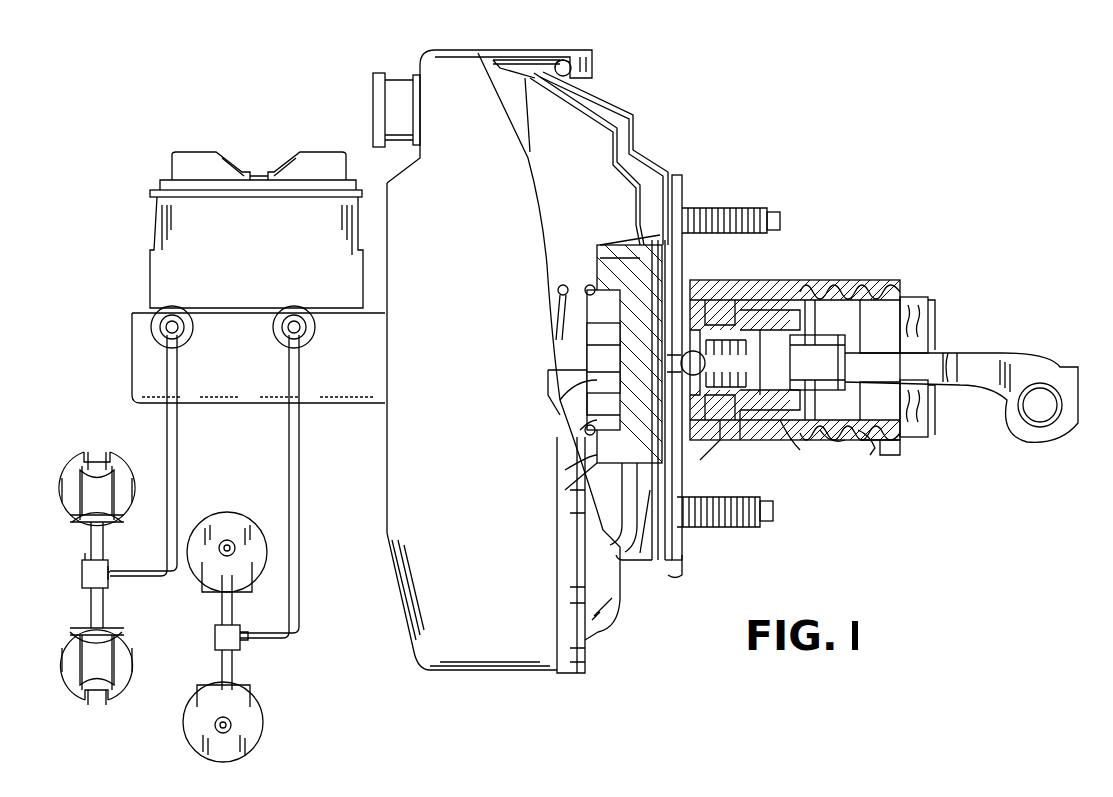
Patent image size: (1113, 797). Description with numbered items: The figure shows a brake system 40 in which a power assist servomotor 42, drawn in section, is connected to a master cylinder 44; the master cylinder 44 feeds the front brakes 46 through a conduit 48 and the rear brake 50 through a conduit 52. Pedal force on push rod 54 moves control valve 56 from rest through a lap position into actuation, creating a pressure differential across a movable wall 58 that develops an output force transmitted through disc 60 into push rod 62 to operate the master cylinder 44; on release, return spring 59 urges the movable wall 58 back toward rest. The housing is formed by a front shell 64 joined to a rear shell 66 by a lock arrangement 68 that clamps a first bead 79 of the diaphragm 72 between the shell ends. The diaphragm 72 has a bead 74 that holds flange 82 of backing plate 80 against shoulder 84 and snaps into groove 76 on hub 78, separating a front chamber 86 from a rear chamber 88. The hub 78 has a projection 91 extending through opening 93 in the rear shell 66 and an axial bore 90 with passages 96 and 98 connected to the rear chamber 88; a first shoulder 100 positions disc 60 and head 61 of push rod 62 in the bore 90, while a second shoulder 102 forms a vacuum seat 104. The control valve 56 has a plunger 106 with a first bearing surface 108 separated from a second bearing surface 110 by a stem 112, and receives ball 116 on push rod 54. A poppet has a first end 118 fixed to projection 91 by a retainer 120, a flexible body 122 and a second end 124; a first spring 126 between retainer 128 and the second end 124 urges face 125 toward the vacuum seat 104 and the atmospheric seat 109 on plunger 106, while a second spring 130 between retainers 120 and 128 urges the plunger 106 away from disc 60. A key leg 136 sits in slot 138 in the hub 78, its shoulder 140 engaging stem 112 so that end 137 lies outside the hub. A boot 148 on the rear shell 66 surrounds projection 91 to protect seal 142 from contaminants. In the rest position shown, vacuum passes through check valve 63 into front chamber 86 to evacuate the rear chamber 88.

The brake system 40 is at (519, 722).
The power assist servomotor 42 is at (724, 109).
The master cylinder 44 is at (140, 312).
The front brakes 46 is at (207, 677).
The conduit 48 is at (290, 645).
The rear brake 50 is at (82, 632).
The conduit 52 is at (178, 462).
The push rod 54 is at (1040, 372).
The control valve 56 is at (805, 420).
The movable wall 58 is at (543, 121).
The return spring 59 is at (558, 287).
The disc 60 is at (585, 318).
The head 61 is at (560, 400).
The push rod 62 is at (548, 370).
The check valve 63 is at (373, 97).
The front shell 64 is at (425, 65).
The rear shell 66 is at (636, 106).
The lock arrangement 68 is at (613, 70).
The diaphragm 72 is at (493, 80).
The bead 74 is at (632, 238).
The groove 76 is at (597, 258).
The hub 78 is at (565, 455).
The first bead 79 is at (563, 58).
The backing plate 80 is at (612, 181).
The flange 82 is at (638, 250).
The shoulder 84 is at (620, 480).
The front chamber 86 is at (516, 101).
The rear chamber 88 is at (655, 193).
The axial bore 90 is at (888, 445).
The projection 91 is at (875, 452).
The opening 93 is at (790, 300).
The passage 96 is at (705, 455).
The passage 98 is at (770, 305).
The first shoulder 100 is at (590, 345).
The second shoulder 102 is at (742, 440).
The vacuum seat 104 is at (722, 445).
The plunger 106 is at (587, 360).
The first bearing surface 108 is at (580, 430).
The atmospheric seat 109 is at (565, 490).
The second bearing surface 110 is at (725, 290).
The stem 112 is at (700, 290).
The ball 116 is at (687, 363).
The first end 118 is at (830, 292).
The retainer 120 is at (850, 292).
The flexible body 122 is at (790, 290).
The second end 124 is at (795, 445).
The face 125 is at (770, 305).
The first spring 126 is at (830, 443).
The retainer 128 is at (915, 298).
The second spring 130 is at (865, 305).
The leg 136 is at (650, 548).
The end 137 is at (672, 530).
The slot 138 is at (690, 268).
The shoulder 140 is at (676, 175).
The seal 142 is at (810, 300).
The boot 148 is at (935, 305).